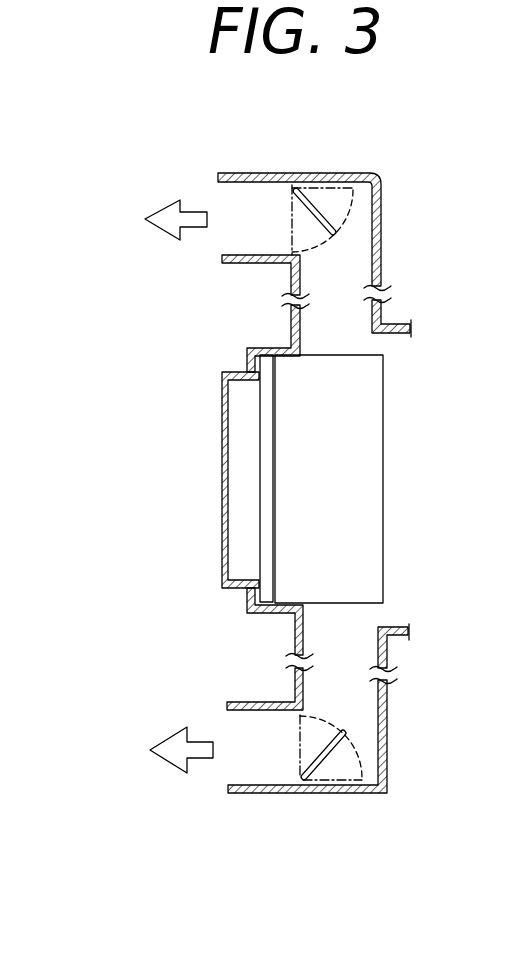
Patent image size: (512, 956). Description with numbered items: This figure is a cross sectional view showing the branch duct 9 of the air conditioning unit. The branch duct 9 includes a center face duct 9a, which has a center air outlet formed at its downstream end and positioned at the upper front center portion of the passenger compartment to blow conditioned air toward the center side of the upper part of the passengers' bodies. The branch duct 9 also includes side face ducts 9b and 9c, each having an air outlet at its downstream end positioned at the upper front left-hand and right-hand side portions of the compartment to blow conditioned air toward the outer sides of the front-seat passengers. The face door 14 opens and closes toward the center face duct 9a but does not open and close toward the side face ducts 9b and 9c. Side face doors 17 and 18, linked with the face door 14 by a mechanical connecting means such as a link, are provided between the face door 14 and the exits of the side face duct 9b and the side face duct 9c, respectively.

The branch duct 9 is at (418, 402).
The center face duct 9a is at (243, 497).
The side face duct 9b is at (240, 753).
The side face duct 9c is at (227, 205).
The face door 14 is at (357, 486).
The side face door 17 is at (327, 757).
The side face door 18 is at (318, 207).